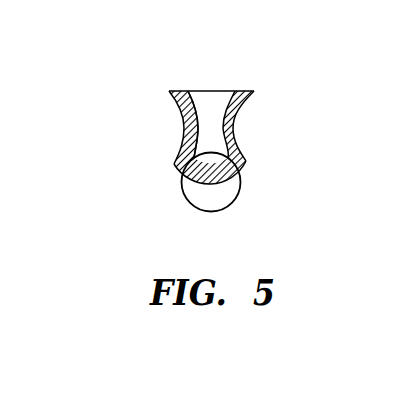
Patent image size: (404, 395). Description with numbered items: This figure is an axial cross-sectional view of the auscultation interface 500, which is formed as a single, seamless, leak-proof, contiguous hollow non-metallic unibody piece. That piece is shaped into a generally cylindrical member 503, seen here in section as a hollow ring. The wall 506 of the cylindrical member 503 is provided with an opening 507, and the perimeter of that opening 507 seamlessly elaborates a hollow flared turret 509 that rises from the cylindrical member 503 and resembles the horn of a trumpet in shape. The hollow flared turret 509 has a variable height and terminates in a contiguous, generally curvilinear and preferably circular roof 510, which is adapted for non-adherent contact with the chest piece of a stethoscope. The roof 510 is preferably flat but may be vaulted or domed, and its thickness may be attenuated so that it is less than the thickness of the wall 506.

The auscultation interface 500 is at (304, 76).
The roof 510 is at (208, 90).
The hollow flared turret 509 is at (193, 122).
The opening 507 is at (215, 126).
The cylindrical member 503 is at (248, 175).
The wall 506 is at (240, 201).